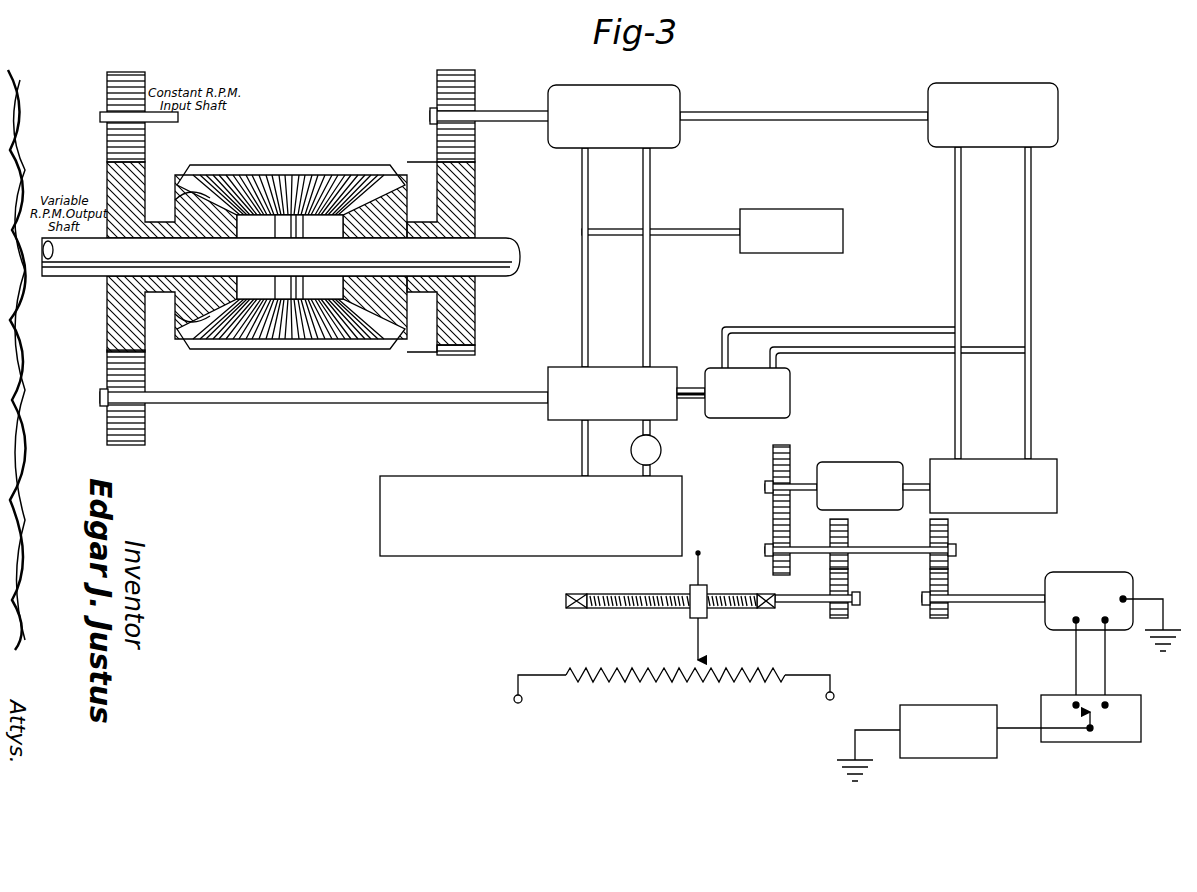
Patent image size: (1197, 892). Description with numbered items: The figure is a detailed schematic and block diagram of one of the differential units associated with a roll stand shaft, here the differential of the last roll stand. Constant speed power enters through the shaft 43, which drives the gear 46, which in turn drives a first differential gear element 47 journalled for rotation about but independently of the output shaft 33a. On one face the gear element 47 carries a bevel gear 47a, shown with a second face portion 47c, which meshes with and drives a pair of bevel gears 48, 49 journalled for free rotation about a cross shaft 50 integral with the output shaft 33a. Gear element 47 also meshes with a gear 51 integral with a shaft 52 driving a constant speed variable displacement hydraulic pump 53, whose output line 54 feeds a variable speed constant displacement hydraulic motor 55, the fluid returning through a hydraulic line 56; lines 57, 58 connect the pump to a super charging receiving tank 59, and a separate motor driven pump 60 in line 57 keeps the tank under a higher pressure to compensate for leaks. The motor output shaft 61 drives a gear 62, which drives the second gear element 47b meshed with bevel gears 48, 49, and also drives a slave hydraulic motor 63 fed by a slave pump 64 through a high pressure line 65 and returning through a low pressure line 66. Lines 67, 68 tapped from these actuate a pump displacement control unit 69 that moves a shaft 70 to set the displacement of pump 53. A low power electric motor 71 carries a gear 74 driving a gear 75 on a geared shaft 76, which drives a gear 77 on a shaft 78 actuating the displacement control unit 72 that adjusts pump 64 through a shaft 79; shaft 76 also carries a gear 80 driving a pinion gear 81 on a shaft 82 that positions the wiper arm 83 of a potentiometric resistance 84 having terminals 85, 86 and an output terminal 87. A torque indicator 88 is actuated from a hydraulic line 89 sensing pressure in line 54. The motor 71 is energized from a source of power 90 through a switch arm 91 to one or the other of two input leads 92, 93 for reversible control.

The output shaft 33a is at (78, 272).
The shaft 43 is at (160, 124).
The gear 46 is at (108, 96).
The first differential gear element 47 is at (108, 179).
The bevel gear 47a is at (174, 188).
The second gear element 47b is at (462, 220).
The housing hub 47c is at (385, 185).
The bevel gear 48 is at (296, 170).
The bevel gear 49 is at (284, 336).
The cross shaft 50 is at (300, 288).
The gear 51 is at (112, 407).
The shaft 52 is at (335, 404).
The constant speed variable displacement hydraulic pump 53 is at (560, 413).
The output line 54 is at (582, 327).
The variable speed constant displacement hydraulic motor 55 is at (662, 86).
The hydraulic line 56 is at (651, 316).
The line 57 is at (652, 436).
The line 58 is at (582, 447).
The super charging receiving tank 59 is at (665, 514).
The motor driven pump 60 is at (661, 452).
The output shaft 61 is at (518, 112).
The gear 62 is at (438, 96).
The slave hydraulic motor 63 is at (1058, 74).
The slave pump 64 is at (1046, 460).
The hydraulic line 65 is at (955, 266).
The hydraulic line 66 is at (1031, 300).
The hydraulic line 67 is at (812, 327).
The hydraulic line 68 is at (830, 355).
The pump displacement control unit 69 is at (732, 418).
The shaft 70 is at (690, 388).
The electric motor 71 is at (1092, 572).
The pump displacement control unit 72 is at (884, 462).
The gear 74 is at (936, 620).
The gear 75 is at (950, 534).
The geared shaft 76 is at (773, 545).
The gear 77 is at (782, 447).
The shaft 78 is at (800, 484).
The shaft 79 is at (914, 484).
The gear 80 is at (848, 575).
The pinion gear 81 is at (845, 620).
The shaft 82 is at (802, 603).
The wiper arm 83 is at (696, 632).
The potentiometric resistance 84 is at (628, 680).
The terminal 85 is at (518, 704).
The terminal 86 is at (826, 699).
The output terminal 87 is at (694, 556).
The torque indicator 88 is at (824, 209).
The hydraulic line 89 is at (610, 236).
The source of power 90 is at (960, 758).
The switch arm 91 is at (1116, 740).
The input lead 92 is at (1075, 660).
The input lead 93 is at (1106, 668).